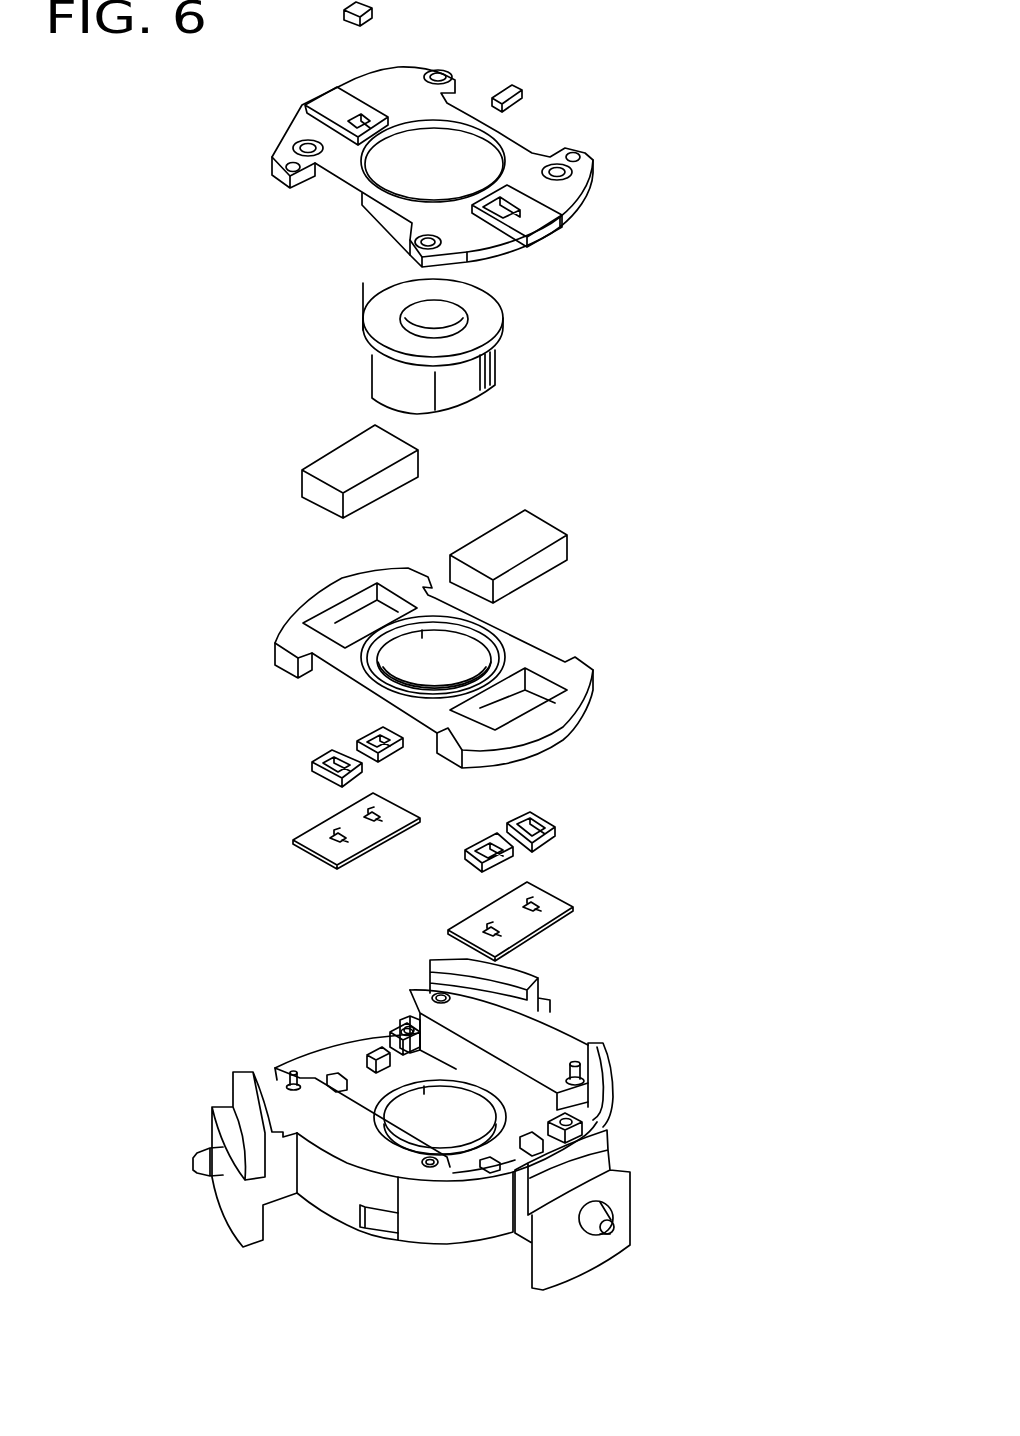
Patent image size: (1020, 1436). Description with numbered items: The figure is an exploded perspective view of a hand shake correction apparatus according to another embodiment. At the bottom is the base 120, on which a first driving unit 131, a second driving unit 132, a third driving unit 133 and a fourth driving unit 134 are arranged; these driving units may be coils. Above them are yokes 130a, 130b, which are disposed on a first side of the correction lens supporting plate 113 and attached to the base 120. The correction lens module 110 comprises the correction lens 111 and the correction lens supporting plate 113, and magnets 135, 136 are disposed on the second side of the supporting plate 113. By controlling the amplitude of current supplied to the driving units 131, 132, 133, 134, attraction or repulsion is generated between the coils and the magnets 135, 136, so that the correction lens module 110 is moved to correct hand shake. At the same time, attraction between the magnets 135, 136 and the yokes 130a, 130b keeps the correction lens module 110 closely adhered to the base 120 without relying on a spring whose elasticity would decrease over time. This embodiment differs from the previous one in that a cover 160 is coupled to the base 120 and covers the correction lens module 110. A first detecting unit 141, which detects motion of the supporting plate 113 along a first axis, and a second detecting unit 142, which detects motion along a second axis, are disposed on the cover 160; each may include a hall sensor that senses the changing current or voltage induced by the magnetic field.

The correction lens module 110 is at (624, 281).
The correction lens 111 is at (460, 323).
The correction lens supporting plate 113 is at (573, 672).
The base 120 is at (337, 1203).
The yoke 130a is at (320, 840).
The yoke 130b is at (538, 925).
The first driving unit 131 is at (373, 733).
The second driving unit 132 is at (487, 837).
The third driving unit 133 is at (312, 764).
The fourth driving unit 134 is at (538, 820).
The magnet 135 is at (343, 452).
The magnet 136 is at (493, 537).
The first detecting unit 141 is at (372, 13).
The second detecting unit 142 is at (518, 85).
The cover 160 is at (578, 189).